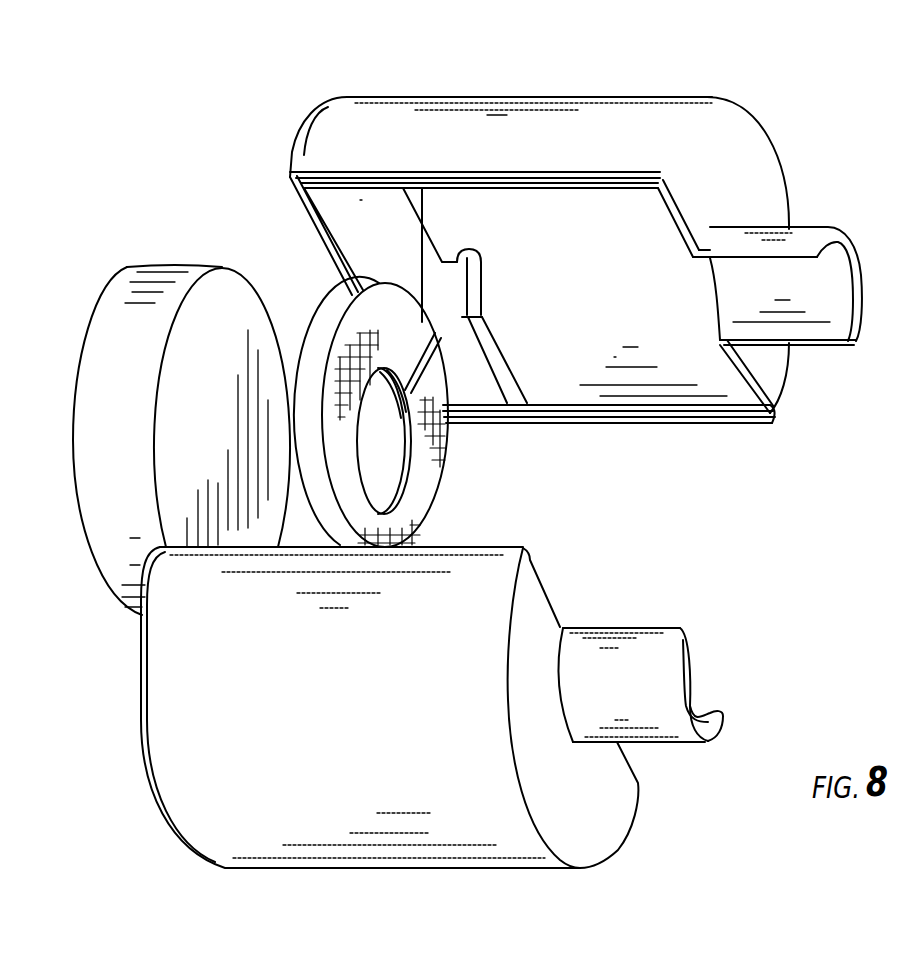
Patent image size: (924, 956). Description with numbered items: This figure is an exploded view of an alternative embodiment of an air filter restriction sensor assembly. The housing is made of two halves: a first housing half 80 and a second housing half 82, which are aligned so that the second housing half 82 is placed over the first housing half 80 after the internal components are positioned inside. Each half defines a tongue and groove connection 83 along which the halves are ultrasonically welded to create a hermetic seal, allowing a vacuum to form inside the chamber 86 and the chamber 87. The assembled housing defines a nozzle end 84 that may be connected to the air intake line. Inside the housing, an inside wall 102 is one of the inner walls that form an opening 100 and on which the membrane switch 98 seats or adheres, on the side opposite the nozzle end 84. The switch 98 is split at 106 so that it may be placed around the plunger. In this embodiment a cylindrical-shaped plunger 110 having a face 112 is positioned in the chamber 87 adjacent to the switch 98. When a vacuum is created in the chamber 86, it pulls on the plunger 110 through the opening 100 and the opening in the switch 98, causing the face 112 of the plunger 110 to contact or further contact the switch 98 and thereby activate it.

The first housing half 80 is at (623, 118).
The second housing half 82 is at (458, 838).
The tongue and groove connection 83 is at (743, 413).
The nozzle end 84 is at (806, 230).
The chamber 86 is at (633, 247).
The chamber 87 is at (355, 225).
The switch 98 is at (425, 500).
The opening 100 is at (481, 272).
The inside wall 102 is at (512, 283).
The split 106 is at (423, 360).
The cylindrical-shaped plunger 110 is at (160, 277).
The face 112 is at (251, 325).